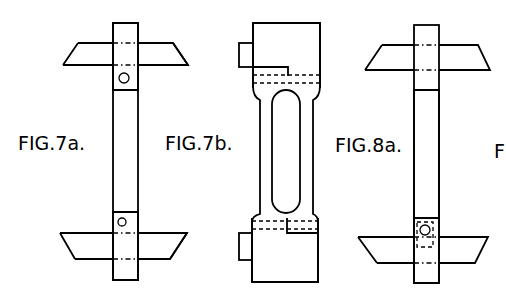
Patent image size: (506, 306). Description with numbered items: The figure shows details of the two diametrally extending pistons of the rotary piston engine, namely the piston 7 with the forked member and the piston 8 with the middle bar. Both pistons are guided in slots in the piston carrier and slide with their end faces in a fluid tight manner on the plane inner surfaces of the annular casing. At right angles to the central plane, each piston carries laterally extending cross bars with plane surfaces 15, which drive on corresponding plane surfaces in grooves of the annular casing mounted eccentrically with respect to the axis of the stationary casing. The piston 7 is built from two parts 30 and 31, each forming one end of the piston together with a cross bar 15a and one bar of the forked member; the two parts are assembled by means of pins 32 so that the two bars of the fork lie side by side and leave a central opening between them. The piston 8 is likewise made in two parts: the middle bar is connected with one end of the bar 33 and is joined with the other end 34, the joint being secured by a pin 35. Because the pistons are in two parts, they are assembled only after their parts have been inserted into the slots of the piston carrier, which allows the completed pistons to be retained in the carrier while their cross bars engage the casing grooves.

In FIG. 7a, the piston 7 is at (139, 118).
In FIG. 7b, the piston 7 is at (260, 120).
In FIG. 8a, the piston 8 is at (440, 115).
In FIG. 7a, the plane surfaces 15 is at (165, 68).
In FIG. 8a, the plane surfaces 15 is at (387, 72).
In FIG. 7a, the cross bar 15a is at (185, 62).
In FIG. 7b, the cross bar 15a is at (239, 60).
In FIG. 7a, the part 30 is at (112, 270).
In FIG. 7b, the part 30 is at (303, 267).
In FIG. 7a, the part 31 is at (113, 30).
In FIG. 7b, the part 31 is at (308, 38).
In FIG. 7a, the pins 32 is at (118, 79).
In FIG. 7b, the pins 32 is at (318, 78).
In FIG. 8a, the bar 33 is at (428, 175).
In FIG. 8a, the other end 34 is at (410, 272).
In FIG. 8a, the pin 35 is at (421, 228).